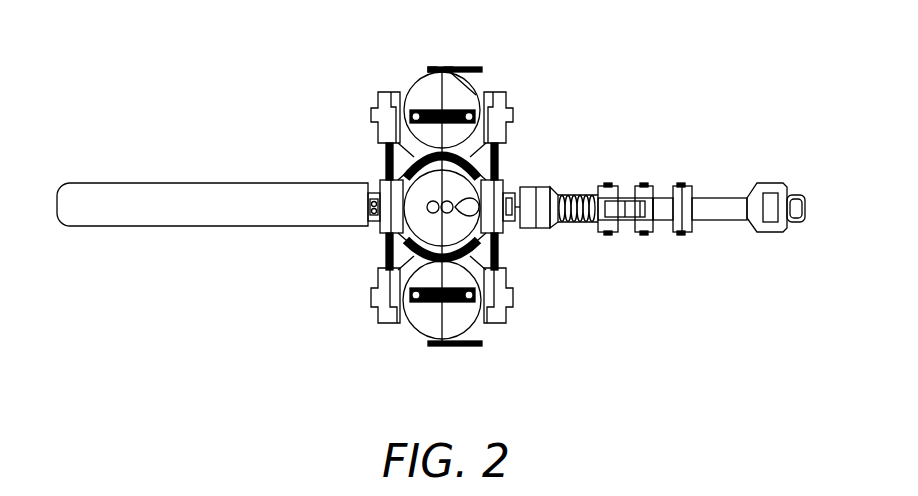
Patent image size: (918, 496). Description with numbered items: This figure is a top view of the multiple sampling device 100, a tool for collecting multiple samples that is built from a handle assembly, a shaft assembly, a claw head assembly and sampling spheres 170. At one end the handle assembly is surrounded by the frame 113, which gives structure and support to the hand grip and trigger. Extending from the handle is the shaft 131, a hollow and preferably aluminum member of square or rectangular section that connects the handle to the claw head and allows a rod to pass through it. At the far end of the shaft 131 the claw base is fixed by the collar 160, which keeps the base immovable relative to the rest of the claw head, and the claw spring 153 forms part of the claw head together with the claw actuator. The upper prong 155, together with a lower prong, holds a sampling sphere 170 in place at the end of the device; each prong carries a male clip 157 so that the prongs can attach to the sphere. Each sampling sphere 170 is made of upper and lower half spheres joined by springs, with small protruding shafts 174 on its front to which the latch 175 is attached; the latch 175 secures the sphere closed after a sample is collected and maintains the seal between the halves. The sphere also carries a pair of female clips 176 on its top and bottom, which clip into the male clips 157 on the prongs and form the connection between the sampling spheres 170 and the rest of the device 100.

The multiple sampling device 100 is at (766, 53).
The frame 113 is at (133, 183).
The shaft 131 is at (512, 230).
The claw spring 153 is at (572, 196).
The upper prong 155 is at (717, 207).
The male clip 157 is at (790, 200).
The collar 160 is at (527, 200).
The sampling sphere 170 is at (449, 87).
The protruding shafts 174 is at (432, 67).
The latch 175 is at (470, 66).
The female clips 176 is at (406, 124).